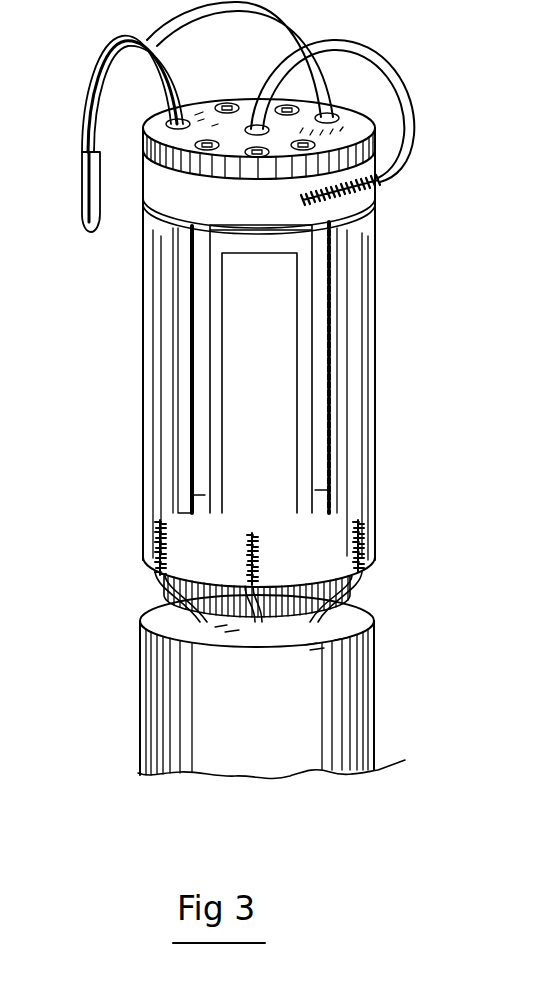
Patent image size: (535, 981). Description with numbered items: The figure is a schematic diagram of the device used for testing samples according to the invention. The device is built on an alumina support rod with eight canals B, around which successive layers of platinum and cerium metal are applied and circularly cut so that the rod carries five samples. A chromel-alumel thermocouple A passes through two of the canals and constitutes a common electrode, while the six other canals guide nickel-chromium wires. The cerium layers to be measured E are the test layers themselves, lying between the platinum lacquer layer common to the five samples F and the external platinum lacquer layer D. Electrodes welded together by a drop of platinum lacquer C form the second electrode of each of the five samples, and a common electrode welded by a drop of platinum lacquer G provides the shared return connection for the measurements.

The chromel-alumel thermocouple A is at (88, 227).
The alumina support rod with eight canals B is at (140, 641).
The electrodes welded together by a drop of platinum lacquer C is at (355, 533).
The external platinum lacquer layer D is at (256, 252).
The cerium layers to be measured E is at (328, 227).
The platinum lacquer layer common to the five samples F is at (160, 185).
The common electrode welded by a drop of platinum lacquer G is at (378, 181).